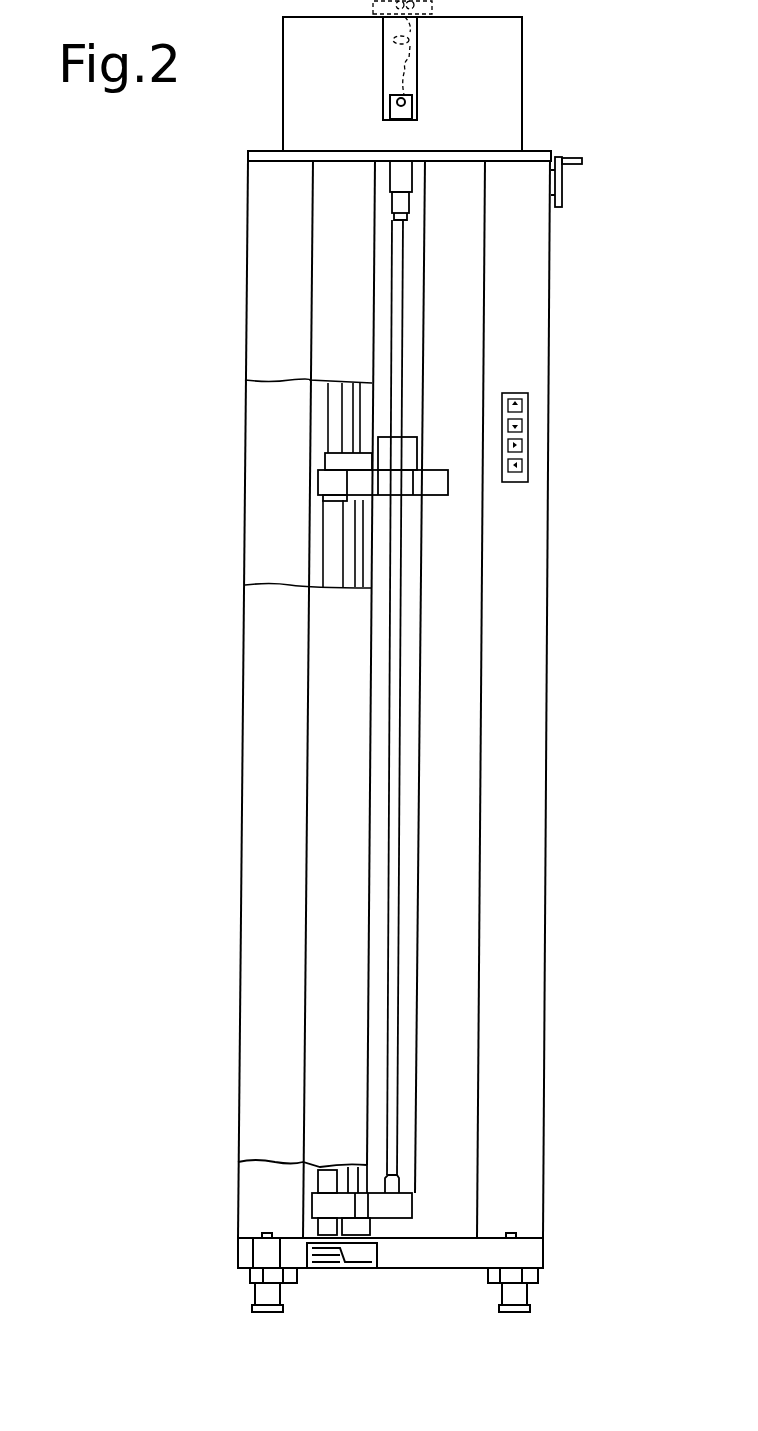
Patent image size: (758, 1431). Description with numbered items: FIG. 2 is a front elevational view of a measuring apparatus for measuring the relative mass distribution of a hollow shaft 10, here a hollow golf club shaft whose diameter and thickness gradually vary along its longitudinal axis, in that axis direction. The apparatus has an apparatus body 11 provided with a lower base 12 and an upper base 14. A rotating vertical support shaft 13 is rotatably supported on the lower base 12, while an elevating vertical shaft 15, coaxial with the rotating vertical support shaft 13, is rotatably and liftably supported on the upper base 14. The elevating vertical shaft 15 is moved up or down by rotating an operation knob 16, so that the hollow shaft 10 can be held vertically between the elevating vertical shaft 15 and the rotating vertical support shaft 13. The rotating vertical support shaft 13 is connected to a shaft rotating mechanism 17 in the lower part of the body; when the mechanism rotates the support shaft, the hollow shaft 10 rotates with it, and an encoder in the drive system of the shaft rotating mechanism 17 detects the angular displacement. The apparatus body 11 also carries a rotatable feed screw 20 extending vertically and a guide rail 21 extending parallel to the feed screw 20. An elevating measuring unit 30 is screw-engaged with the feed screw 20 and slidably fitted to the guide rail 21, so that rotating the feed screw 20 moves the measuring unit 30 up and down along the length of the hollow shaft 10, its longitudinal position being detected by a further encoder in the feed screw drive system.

The hollow shaft 10 is at (390, 1036).
The apparatus body 11 is at (578, 313).
The lower base 12 is at (450, 1258).
The rotating vertical support shaft 13 is at (399, 1190).
The upper base 14 is at (502, 123).
The elevating vertical shaft 15 is at (407, 183).
The operation knob 16 is at (563, 200).
The shaft rotating mechanism 17 is at (268, 1198).
The feed screw 20 is at (363, 405).
The guide rail 21 is at (340, 420).
The elevating measuring unit 30 is at (442, 503).